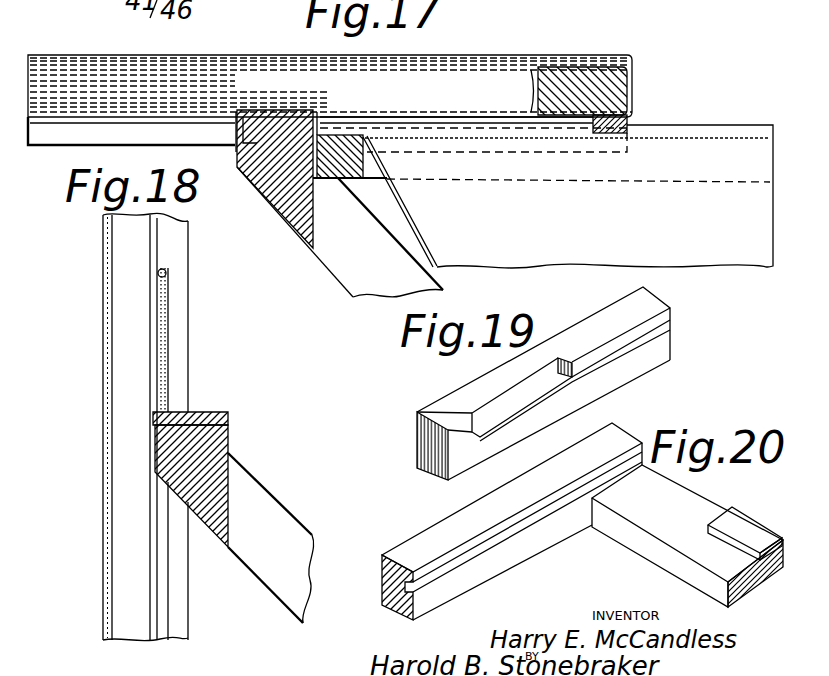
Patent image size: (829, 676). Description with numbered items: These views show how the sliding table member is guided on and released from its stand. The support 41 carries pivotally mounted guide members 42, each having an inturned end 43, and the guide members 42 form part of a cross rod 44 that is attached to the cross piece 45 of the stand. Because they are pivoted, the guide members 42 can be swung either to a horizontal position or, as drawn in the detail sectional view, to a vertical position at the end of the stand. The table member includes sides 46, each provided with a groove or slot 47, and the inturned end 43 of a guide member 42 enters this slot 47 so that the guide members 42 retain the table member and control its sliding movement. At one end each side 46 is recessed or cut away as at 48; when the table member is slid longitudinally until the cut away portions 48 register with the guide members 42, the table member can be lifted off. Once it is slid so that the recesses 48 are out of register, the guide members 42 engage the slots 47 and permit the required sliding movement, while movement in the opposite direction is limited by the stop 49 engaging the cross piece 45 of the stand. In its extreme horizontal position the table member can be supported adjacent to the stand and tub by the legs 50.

In FIG. 17, the support 41 is at (345, 262).
In FIG. 18, the support 41 is at (265, 497).
In FIG. 17, the guide member 42 is at (333, 112).
In FIG. 18, the guide member 42 is at (168, 307).
In FIG. 17, the inturned end 43 is at (390, 123).
In FIG. 18, the inturned end 43 is at (167, 268).
In FIG. 17, the cross rod 44 is at (235, 126).
In FIG. 18, the cross rod 44 is at (172, 410).
In FIG. 17, the cross piece 45 is at (250, 177).
In FIG. 18, the cross piece 45 is at (230, 432).
In FIG. 17, the side 46 is at (582, 80).
In FIG. 18, the side 46 is at (190, 357).
In FIG. 19, the side 46 is at (587, 327).
In FIG. 20, the side 46 is at (420, 540).
In FIG. 17, the groove or slot 47 is at (136, 113).
In FIG. 18, the groove or slot 47 is at (163, 242).
In FIG. 19, the groove or slot 47 is at (668, 338).
In FIG. 20, the groove or slot 47 is at (537, 515).
In FIG. 19, the cut away portion 48 is at (500, 397).
In FIG. 17, the stop 49 is at (632, 117).
In FIG. 20, the stop 49 is at (735, 520).
In FIG. 17, the leg 50 is at (456, 78).
In FIG. 18, the leg 50 is at (127, 323).